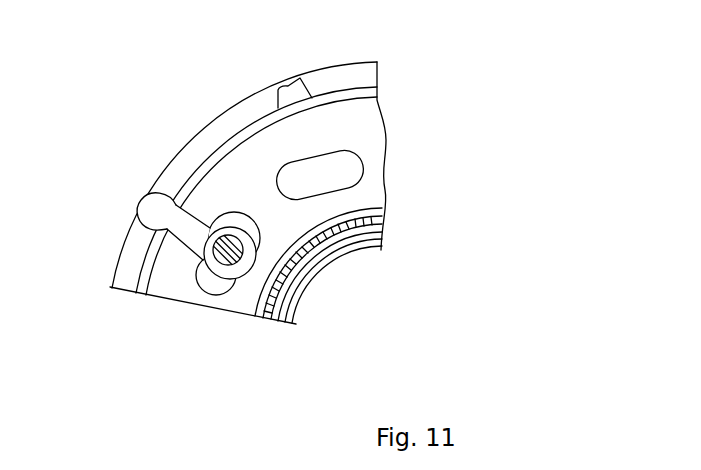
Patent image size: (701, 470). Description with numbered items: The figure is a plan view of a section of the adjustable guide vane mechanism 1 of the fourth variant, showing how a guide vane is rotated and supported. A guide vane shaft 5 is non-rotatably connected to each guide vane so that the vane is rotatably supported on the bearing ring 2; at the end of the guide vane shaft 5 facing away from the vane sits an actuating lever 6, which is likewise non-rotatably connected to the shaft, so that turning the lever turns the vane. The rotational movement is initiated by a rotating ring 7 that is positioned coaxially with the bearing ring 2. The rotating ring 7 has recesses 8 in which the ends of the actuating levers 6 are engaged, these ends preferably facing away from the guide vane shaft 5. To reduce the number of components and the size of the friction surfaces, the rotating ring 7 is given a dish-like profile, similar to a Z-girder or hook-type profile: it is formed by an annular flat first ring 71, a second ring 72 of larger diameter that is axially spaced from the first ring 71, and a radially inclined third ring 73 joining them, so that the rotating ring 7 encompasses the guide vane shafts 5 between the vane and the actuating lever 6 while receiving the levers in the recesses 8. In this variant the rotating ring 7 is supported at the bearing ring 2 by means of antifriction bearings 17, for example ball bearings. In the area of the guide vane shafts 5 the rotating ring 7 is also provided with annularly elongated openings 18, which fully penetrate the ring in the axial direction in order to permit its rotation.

The adjustable guide vane mechanism 1 is at (492, 158).
The bearing ring 2 is at (298, 309).
The guide vane shaft 5 is at (233, 264).
The actuating lever 6 is at (177, 237).
The rotating ring 7 is at (228, 228).
The recess 8 is at (134, 200).
The antifriction bearing 17 is at (343, 229).
The annularly elongated opening 18 is at (344, 167).
The first ring 71 is at (197, 294).
The second ring 72 is at (123, 289).
The third ring 73 is at (135, 296).